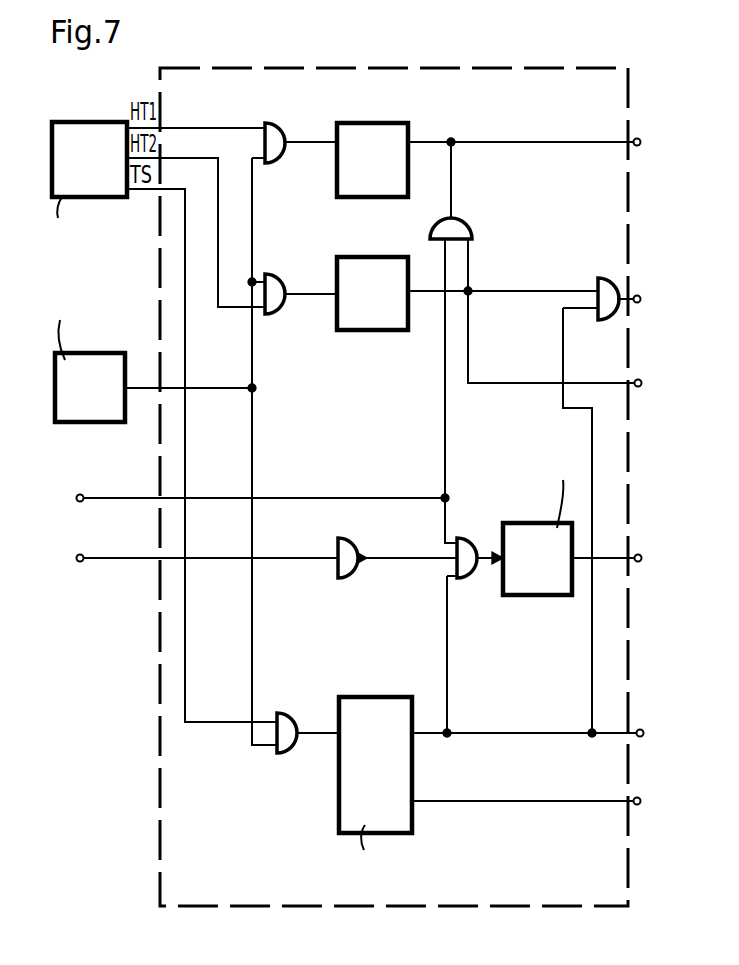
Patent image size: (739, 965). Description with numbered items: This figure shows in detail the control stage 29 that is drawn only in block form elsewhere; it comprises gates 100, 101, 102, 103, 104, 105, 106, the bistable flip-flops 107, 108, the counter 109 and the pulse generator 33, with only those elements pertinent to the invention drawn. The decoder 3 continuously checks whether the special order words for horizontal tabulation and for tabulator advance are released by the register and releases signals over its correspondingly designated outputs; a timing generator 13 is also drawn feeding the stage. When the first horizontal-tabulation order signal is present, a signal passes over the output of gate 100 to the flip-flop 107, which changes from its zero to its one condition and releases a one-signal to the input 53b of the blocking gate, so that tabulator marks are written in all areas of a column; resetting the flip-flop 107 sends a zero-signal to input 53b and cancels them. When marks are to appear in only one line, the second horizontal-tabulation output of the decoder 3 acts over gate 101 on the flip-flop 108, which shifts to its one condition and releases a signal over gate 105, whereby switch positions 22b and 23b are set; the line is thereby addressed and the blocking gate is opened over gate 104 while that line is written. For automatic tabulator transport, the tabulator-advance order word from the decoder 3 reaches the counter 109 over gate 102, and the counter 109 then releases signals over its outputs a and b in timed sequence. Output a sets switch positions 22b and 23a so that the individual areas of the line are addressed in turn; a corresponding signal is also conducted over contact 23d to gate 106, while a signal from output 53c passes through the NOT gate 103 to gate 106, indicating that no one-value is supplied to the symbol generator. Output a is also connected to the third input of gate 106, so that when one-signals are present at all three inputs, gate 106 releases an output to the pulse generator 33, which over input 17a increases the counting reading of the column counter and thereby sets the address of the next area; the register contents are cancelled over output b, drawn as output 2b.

The decoder 3 is at (95, 161).
The timing generator 13 is at (137, 353).
The control stage 29 is at (394, 468).
The pulse generator 33 is at (560, 519).
The gate 100 is at (298, 129).
The gate 101 is at (297, 279).
The gate 102 is at (303, 718).
The NOT gate 103 is at (392, 545).
The gate 104 is at (534, 342).
The gate 105 is at (600, 490).
The gate 106 is at (475, 621).
The bistable flip-flop 107 is at (487, 145).
The bistable flip-flop 108 is at (467, 277).
The counter 109 is at (489, 764).
The input of gate 53 53b is at (643, 129).
The switch position 22b is at (643, 315).
The switch position 23b is at (643, 368).
The input of counter 17 17a is at (643, 543).
The switch position 23a is at (648, 718).
The output terminal 2b is at (640, 786).
The contact 23d is at (258, 484).
The output 53c is at (205, 544).